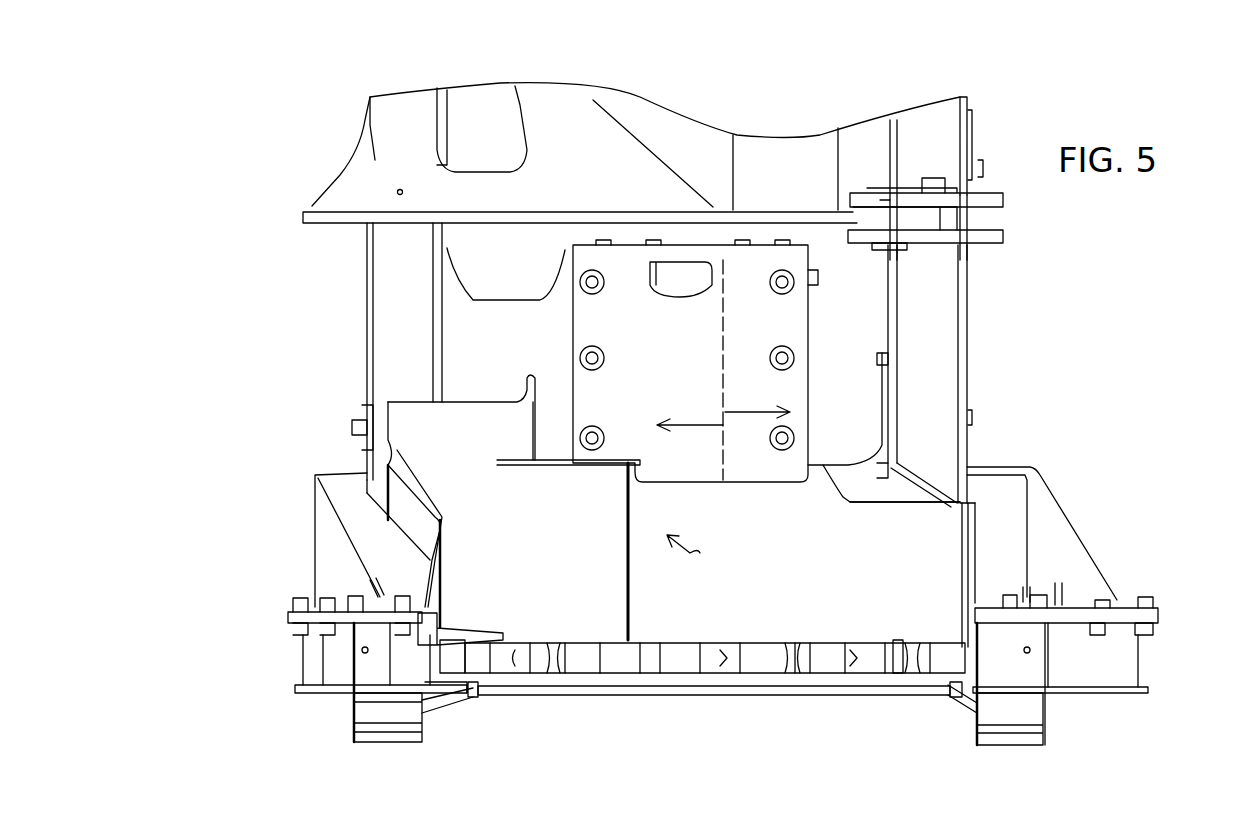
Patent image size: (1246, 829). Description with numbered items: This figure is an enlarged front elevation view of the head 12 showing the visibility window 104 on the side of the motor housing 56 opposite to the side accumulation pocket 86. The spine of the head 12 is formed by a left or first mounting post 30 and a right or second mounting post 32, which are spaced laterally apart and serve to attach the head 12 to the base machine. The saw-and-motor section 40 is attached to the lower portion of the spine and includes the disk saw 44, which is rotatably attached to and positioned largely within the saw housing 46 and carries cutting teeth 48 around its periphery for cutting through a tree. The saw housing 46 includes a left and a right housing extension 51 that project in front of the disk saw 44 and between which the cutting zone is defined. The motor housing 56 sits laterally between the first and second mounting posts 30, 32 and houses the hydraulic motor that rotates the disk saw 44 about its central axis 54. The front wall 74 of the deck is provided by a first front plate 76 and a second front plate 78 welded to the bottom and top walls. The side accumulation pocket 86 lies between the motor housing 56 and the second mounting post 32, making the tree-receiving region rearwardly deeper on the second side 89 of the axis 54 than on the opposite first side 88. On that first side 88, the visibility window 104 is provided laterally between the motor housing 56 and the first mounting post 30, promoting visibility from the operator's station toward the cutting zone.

The head 12 is at (333, 160).
The first mounting post 30 is at (935, 343).
The second mounting post 32 is at (398, 350).
The saw-and-motor section 40 is at (1028, 440).
The disk saw 44 is at (618, 657).
The saw housing 46 is at (1120, 663).
The cutting teeth 48 is at (670, 697).
The housing extension 51 is at (372, 667).
The central axis 54 is at (723, 340).
The motor housing 56 is at (787, 320).
The front wall 74 is at (697, 560).
The first front plate 76 is at (837, 583).
The second front plate 78 is at (533, 512).
The side accumulation pocket 86 is at (485, 557).
The first side 88 is at (737, 410).
The second side 89 is at (705, 425).
The visibility window 104 is at (825, 440).